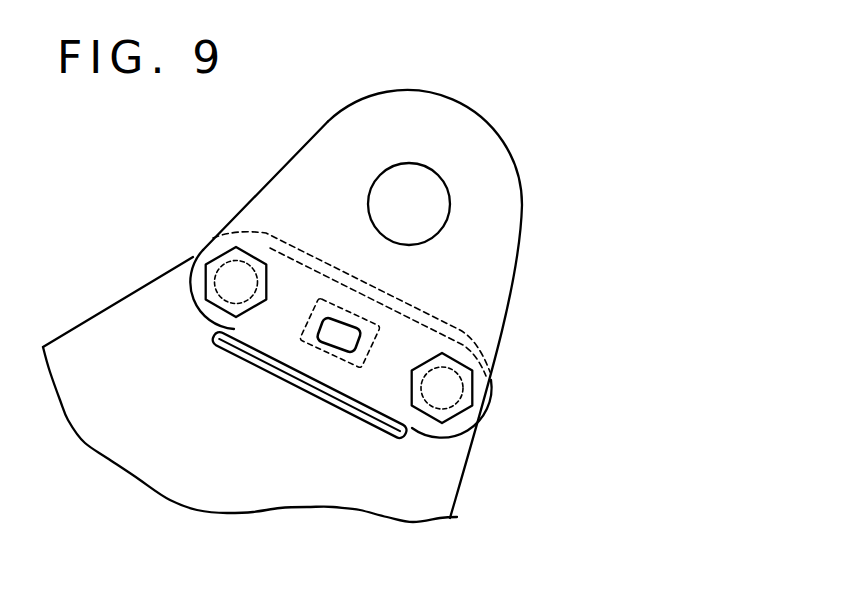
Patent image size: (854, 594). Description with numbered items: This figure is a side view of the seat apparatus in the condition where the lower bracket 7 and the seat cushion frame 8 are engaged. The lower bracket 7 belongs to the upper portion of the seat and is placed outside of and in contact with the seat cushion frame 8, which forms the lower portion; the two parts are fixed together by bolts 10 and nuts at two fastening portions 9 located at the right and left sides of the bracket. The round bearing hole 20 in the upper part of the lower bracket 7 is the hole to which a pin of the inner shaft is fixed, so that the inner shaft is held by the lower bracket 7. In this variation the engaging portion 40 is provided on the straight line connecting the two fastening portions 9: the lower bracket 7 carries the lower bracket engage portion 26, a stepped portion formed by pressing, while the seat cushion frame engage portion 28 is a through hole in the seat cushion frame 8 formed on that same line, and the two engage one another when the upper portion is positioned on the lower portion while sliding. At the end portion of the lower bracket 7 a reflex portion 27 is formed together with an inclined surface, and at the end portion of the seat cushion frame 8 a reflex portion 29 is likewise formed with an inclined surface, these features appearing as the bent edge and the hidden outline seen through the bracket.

The lower bracket 7 is at (507, 243).
The seat cushion frame 8 is at (104, 328).
The fastening portion 9 is at (203, 250).
The bolt 10 is at (210, 290).
The bearing hole 20 is at (418, 170).
The lower bracket engage portion 26 is at (343, 333).
The reflex portion 27 is at (353, 420).
The seat cushion frame engage portion 28 is at (316, 372).
The reflex portion 29 is at (330, 263).
The engaging portion 40 is at (297, 332).